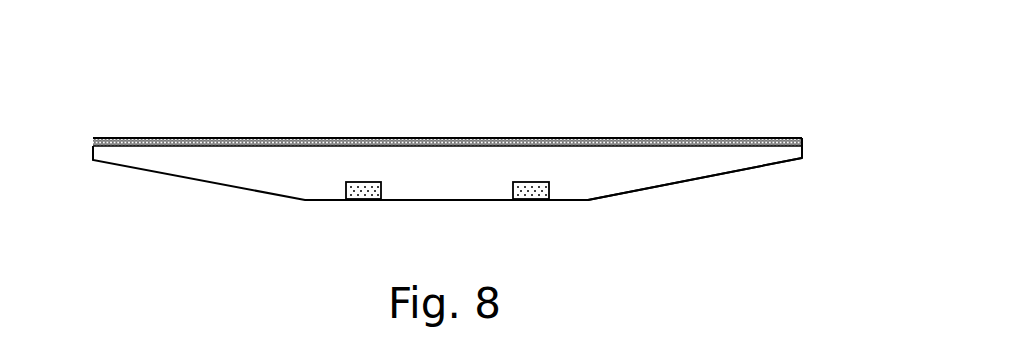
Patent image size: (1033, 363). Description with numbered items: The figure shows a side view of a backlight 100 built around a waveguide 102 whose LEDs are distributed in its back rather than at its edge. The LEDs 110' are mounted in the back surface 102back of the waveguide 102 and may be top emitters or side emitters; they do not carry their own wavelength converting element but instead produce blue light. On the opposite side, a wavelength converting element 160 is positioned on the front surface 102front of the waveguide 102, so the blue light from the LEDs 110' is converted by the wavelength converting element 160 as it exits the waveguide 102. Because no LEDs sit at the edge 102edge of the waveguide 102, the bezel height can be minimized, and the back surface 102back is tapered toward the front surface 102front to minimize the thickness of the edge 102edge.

The backlight 100 is at (138, 70).
The waveguide 102 is at (597, 155).
The front surface 102front is at (432, 143).
The back surface 102back is at (632, 193).
The edge 102edge is at (802, 148).
The wavelength converting element 160 is at (350, 137).
The LED 110' is at (493, 242).